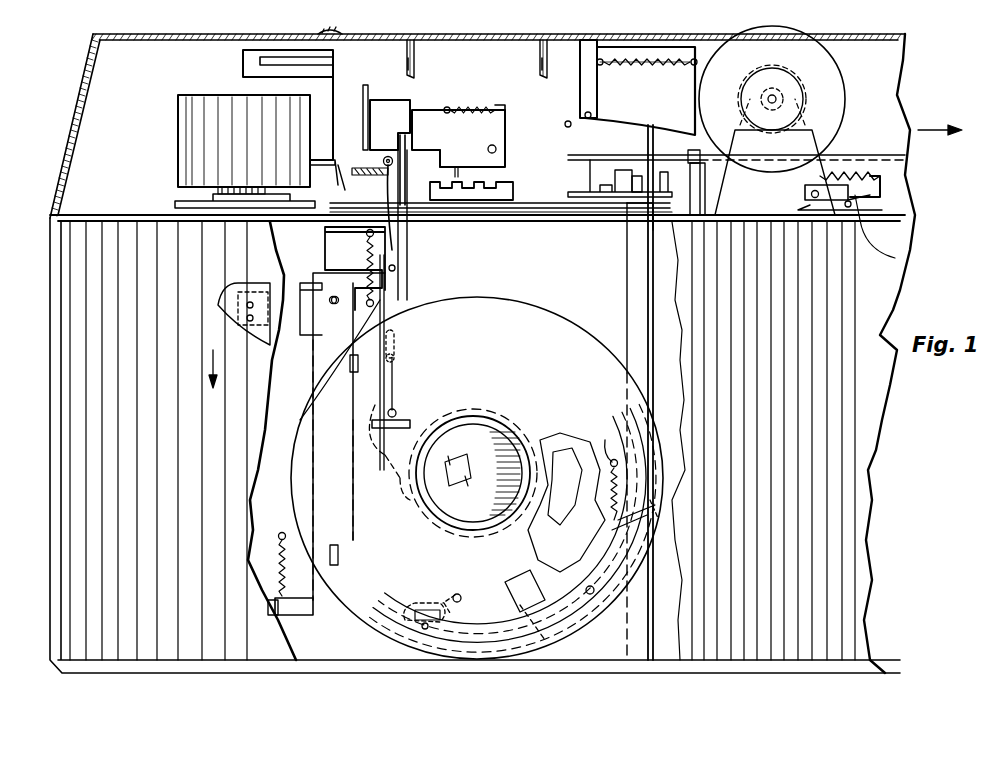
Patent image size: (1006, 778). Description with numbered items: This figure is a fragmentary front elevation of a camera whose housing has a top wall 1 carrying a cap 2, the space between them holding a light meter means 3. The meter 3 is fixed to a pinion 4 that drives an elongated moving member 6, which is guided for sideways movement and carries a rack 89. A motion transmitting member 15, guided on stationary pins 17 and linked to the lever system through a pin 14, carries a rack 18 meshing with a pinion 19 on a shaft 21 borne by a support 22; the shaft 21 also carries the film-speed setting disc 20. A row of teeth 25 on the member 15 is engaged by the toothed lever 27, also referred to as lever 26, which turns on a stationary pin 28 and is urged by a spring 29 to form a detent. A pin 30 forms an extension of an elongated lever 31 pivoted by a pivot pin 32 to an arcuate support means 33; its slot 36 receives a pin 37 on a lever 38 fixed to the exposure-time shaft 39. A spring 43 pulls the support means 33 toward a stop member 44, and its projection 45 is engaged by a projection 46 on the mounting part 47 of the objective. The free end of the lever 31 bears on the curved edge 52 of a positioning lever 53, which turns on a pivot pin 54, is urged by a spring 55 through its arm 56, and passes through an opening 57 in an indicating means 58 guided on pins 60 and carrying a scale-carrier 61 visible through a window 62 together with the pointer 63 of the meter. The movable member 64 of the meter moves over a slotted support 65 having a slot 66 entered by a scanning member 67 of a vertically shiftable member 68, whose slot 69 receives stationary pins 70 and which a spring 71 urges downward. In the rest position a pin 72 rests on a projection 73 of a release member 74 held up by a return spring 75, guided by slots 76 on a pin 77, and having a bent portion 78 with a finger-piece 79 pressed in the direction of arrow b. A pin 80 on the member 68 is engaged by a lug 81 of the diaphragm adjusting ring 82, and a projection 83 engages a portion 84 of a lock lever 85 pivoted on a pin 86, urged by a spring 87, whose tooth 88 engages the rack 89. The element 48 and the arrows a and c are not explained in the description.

The top wall 1 is at (440, 212).
The cap 2 is at (660, 24).
The light meter means 3 is at (200, 143).
The pinion 4 is at (218, 191).
The elongated moving member 6 is at (540, 212).
The pin 14 is at (592, 178).
The elongated motion transmitting member 15 is at (608, 155).
The stationary pins 17 is at (700, 180).
The rack 18 is at (815, 122).
The pinion 19 is at (800, 75).
The disc 20 is at (783, 30).
The shaft 21 is at (790, 99).
The support 22 is at (810, 170).
The row of teeth 25 is at (880, 172).
The lever 26 is at (895, 258).
The lever 27 is at (880, 183).
The stationary pin 28 is at (805, 193).
The spring 29 is at (858, 205).
The pin 30 is at (672, 142).
The elongated lever 31 is at (637, 278).
The pivot pin 32 is at (596, 590).
The support means 33 is at (600, 612).
The elongated slot 36 is at (420, 612).
The pin 37 is at (455, 595).
The lever 38 is at (455, 597).
The rotary shaft 39 is at (450, 590).
The spring 43 is at (607, 470).
The stationary stop member 44 is at (660, 520).
The projection 45 is at (540, 592).
The projection 46 is at (575, 545).
The mounting part 47 is at (568, 470).
The switch contact 48 is at (636, 174).
The curved edge 52 is at (628, 110).
The positioning lever 53 is at (680, 95).
The stationary pivot pin 54 is at (568, 124).
The spring 55 is at (648, 58).
The arm 56 is at (580, 86).
The opening 57 is at (568, 40).
The elongated indicating means 58 is at (437, 40).
The stationary pins 60 is at (541, 58).
The scale-carrier 61 is at (325, 60).
The window 62 is at (345, 18).
The pointer 63 is at (262, 53).
The movable member 64 is at (333, 165).
The slotted support 65 is at (343, 163).
The elongated slot 66 is at (360, 178).
The scanning member 67 is at (365, 118).
The vertically shiftable member 68 is at (412, 100).
The elongated slot 69 is at (400, 338).
The stationary pins 70 is at (400, 358).
The spring 71 is at (365, 252).
The pin 72 is at (395, 267).
The projection 73 is at (385, 280).
The elongated member 74 is at (330, 342).
The return spring 75 is at (275, 540).
The elongated slots 76 is at (340, 560).
The stationary pin 77 is at (330, 566).
The angularly bent portion 78 is at (283, 305).
The finger-piece 79 is at (220, 302).
The pin 80 is at (395, 410).
The lug 81 is at (400, 415).
The rotary adjusting ring 82 is at (490, 420).
The projection 83 is at (425, 158).
The portion 84 is at (448, 108).
The lock lever 85 is at (498, 137).
The stationary pin 86 is at (497, 149).
The spring 87 is at (463, 108).
The tooth 88 is at (458, 178).
The rack 89 is at (482, 190).
The direction arrow a is at (567, 620).
The arrow b is at (212, 355).
The direction arrow c is at (940, 120).